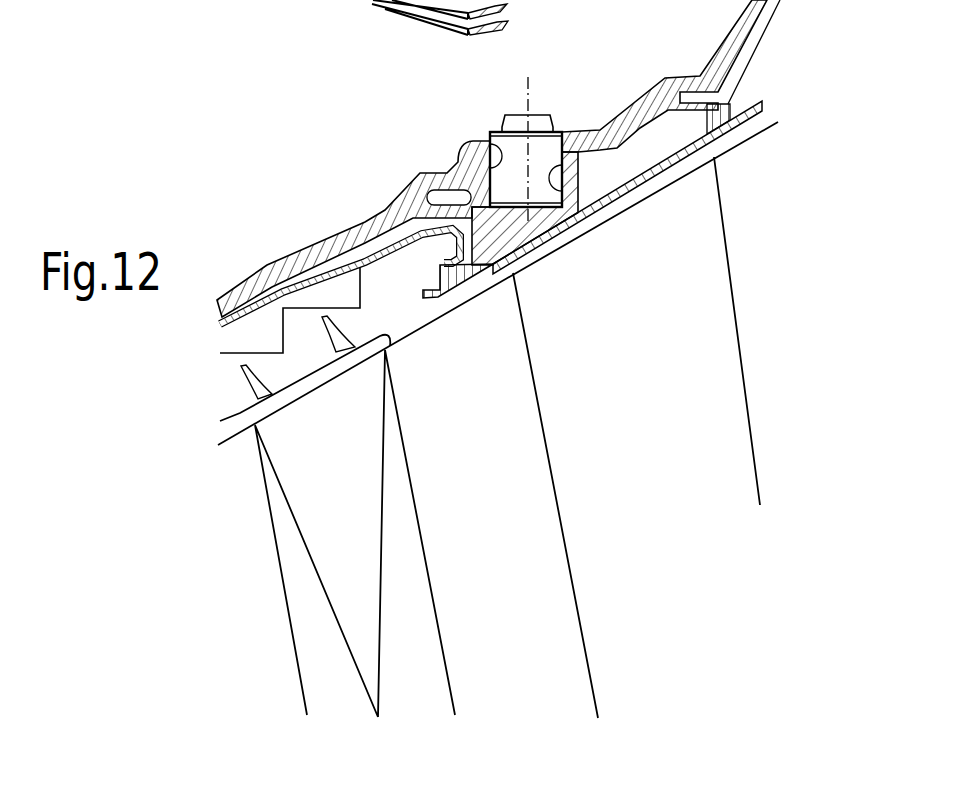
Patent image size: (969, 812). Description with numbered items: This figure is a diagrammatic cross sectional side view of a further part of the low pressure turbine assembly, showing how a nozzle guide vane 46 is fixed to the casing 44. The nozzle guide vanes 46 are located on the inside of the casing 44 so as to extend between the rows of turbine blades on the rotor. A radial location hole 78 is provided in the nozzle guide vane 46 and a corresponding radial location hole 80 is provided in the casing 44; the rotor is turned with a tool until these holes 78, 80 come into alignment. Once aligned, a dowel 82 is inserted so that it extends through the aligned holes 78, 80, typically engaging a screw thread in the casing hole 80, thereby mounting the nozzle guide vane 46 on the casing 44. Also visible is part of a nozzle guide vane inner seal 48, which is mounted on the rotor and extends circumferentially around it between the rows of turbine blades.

The casing 44 is at (641, 108).
The nozzle guide vanes 46 is at (700, 313).
The nozzle guide vane inner seals 48 is at (374, 17).
The radial location hole 78 is at (547, 197).
The radial location hole 80 is at (470, 163).
The dowel 82 is at (543, 140).